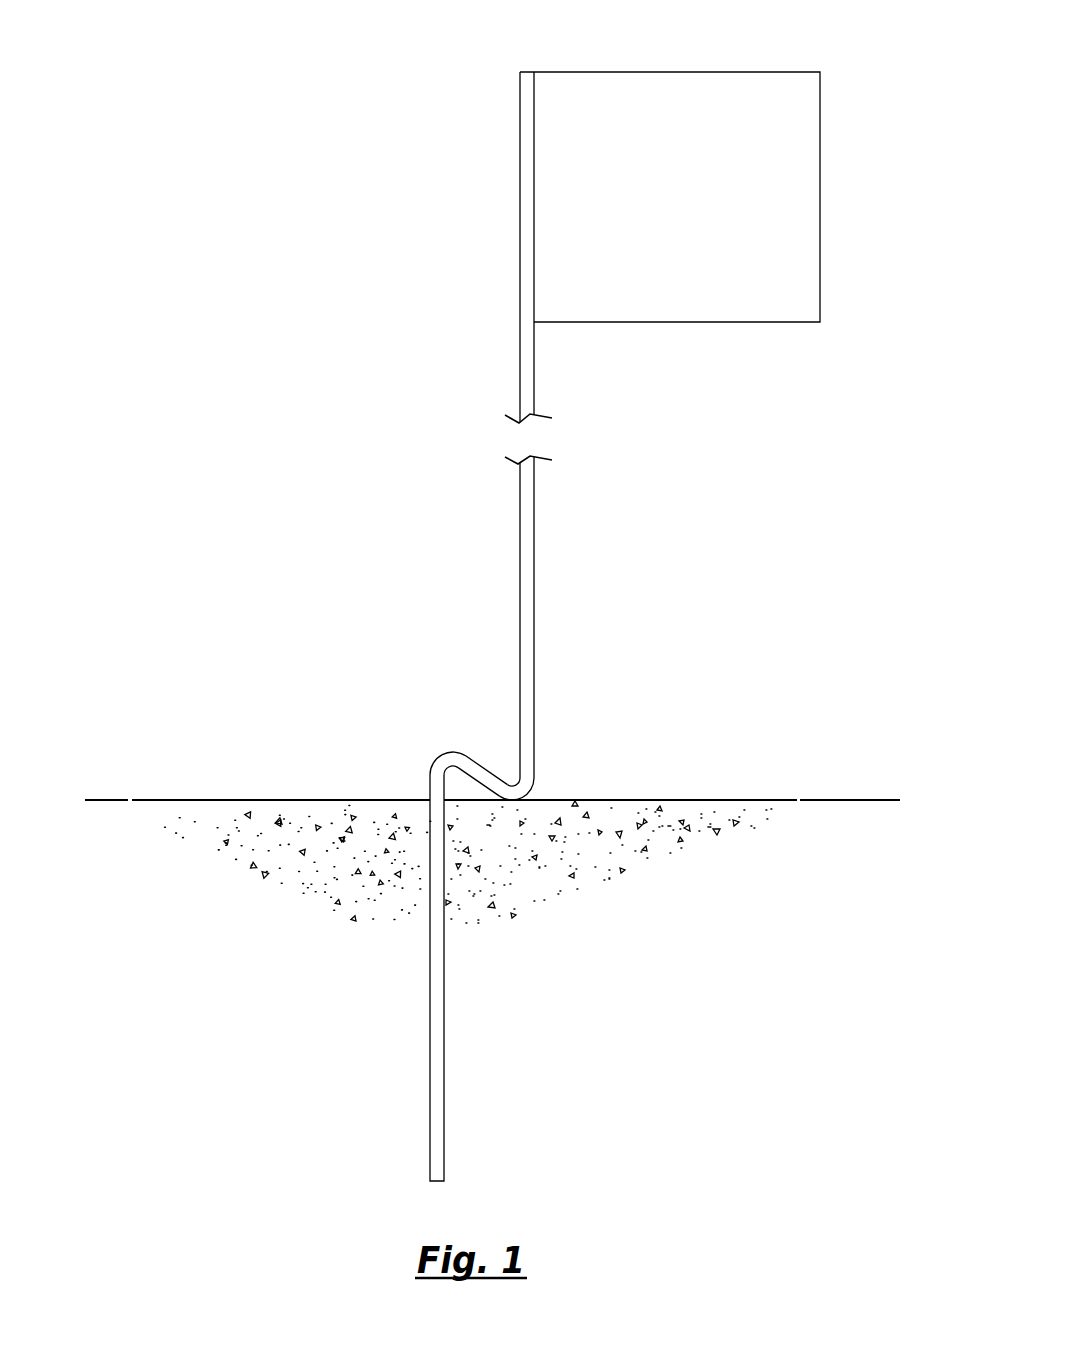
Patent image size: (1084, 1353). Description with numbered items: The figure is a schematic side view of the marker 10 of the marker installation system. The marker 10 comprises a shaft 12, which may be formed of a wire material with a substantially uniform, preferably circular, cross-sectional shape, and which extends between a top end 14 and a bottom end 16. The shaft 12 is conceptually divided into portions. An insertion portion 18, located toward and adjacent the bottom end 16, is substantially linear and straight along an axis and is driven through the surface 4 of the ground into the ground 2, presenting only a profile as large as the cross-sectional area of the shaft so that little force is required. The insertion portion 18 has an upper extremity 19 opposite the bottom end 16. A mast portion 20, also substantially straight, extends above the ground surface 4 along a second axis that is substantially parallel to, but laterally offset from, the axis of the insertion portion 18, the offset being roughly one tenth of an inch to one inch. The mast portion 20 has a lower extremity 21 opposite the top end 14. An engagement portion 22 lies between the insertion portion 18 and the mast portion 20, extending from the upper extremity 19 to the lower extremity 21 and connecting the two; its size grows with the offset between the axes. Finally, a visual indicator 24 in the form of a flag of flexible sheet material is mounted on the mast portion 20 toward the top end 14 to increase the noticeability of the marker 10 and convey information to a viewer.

The ground 2 is at (297, 959).
The ground surface 4 is at (645, 800).
The marker 10 is at (604, 612).
The shaft 12 is at (492, 648).
The top end 14 is at (527, 106).
The bottom end 16 is at (436, 1183).
The insertion portion 18 is at (435, 1022).
The upper extremity 19 is at (435, 780).
The mast portion 20 is at (529, 628).
The lower extremity 21 is at (533, 780).
The engagement portion 22 is at (485, 767).
The visual indicator 24 is at (799, 169).